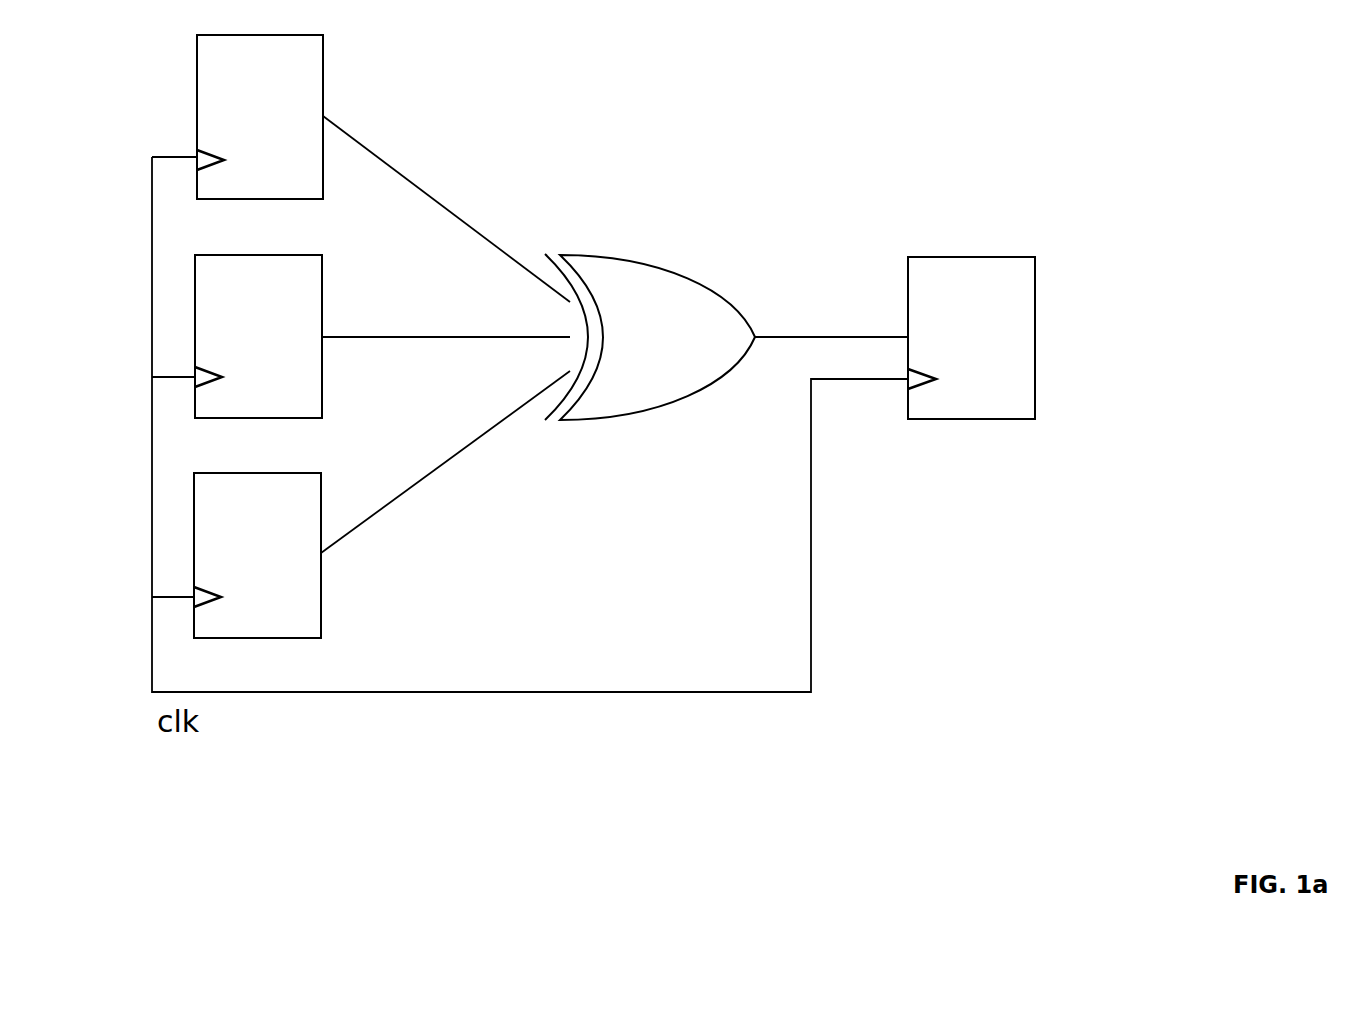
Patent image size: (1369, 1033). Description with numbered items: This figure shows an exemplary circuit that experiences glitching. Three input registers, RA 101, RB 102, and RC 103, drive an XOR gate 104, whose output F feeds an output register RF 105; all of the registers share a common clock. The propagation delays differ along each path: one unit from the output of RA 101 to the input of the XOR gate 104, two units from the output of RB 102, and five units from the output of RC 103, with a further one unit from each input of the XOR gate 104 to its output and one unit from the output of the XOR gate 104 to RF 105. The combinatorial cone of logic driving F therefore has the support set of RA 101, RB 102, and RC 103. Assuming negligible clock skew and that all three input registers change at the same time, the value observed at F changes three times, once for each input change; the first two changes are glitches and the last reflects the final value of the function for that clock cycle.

The input register RA 101 is at (308, 189).
The input register RB 102 is at (308, 407).
The input register RC 103 is at (307, 624).
The XOR gate Fgate 104 is at (711, 380).
The output register RF 105 is at (1021, 408).